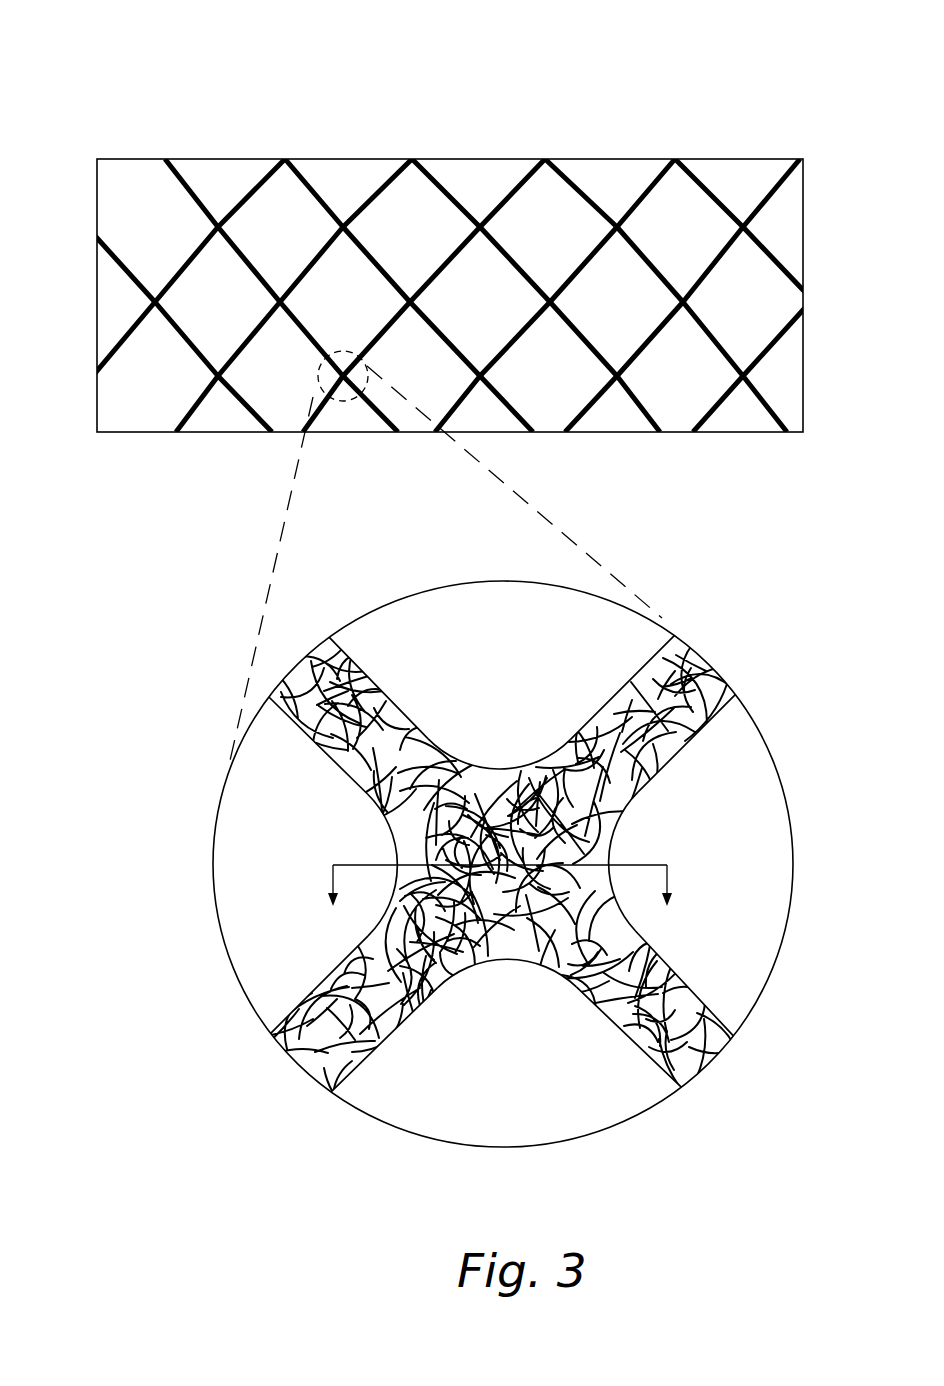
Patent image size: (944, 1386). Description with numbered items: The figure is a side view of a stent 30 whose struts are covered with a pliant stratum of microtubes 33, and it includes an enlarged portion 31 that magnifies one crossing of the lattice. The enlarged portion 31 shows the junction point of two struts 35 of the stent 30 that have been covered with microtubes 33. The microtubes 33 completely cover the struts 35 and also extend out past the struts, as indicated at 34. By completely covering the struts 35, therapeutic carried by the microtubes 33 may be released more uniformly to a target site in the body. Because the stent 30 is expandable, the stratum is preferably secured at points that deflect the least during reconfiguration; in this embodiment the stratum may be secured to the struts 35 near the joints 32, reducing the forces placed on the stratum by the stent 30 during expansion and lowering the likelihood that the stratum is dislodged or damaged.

The stent 30 is at (342, 90).
The enlarged portion 31 is at (158, 927).
The joints 32 is at (320, 375).
The microtubes 33 is at (707, 664).
The microtubes extending past the struts 34 is at (633, 677).
The struts 35 is at (403, 688).